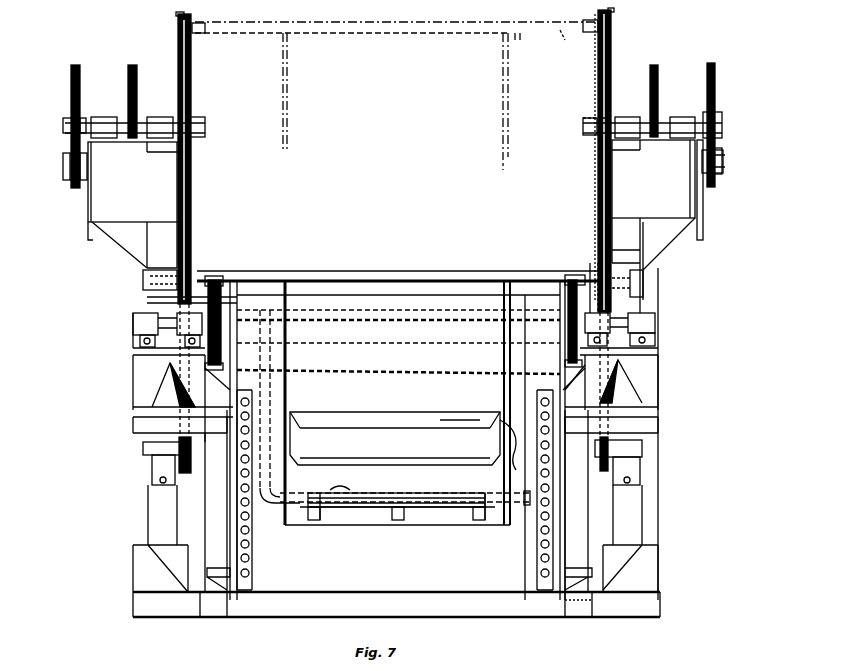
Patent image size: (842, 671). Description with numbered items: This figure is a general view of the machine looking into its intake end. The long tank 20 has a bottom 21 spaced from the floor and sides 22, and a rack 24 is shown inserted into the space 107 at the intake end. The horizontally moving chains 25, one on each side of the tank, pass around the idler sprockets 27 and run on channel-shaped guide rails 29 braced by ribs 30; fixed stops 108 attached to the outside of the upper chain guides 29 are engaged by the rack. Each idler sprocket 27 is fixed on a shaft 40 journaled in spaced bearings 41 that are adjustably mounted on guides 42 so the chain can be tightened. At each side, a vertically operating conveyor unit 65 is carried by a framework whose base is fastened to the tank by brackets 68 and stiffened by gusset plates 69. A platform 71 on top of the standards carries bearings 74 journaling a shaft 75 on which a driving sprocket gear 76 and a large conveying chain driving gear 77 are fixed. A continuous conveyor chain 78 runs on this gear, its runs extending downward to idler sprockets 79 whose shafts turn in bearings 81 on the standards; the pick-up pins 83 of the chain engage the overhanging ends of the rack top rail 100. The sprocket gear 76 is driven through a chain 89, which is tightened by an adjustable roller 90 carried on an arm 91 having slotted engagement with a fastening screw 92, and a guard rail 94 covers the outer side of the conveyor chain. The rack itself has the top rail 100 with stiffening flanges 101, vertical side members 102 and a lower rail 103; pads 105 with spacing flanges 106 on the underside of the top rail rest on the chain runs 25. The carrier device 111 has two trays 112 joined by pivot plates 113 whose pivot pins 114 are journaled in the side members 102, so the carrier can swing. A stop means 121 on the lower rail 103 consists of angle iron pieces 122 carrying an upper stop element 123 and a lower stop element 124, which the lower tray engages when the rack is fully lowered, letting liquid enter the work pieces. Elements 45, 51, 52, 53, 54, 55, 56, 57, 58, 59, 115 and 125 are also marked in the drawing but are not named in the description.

The tank 20 is at (306, 620).
The bottom 21 is at (460, 590).
The sides 22 is at (580, 460).
The racks 24 is at (516, 110).
The horizontally moving chains 25 is at (322, 294).
The idler sprockets 27 is at (580, 322).
The guide rails 29 is at (560, 340).
The ribs 30 is at (595, 378).
The shaft 40 is at (643, 320).
The bearings 41 is at (598, 320).
The guides 42 is at (652, 340).
The mounting plate 45 is at (635, 352).
The brace 51 is at (656, 372).
The base member 52 is at (660, 600).
The leg 53 is at (600, 510).
The foot plate 54 is at (578, 610).
The column 55 is at (630, 380).
The bearing block 56 is at (655, 345).
The cross plate 57 is at (640, 425).
The support beam 58 is at (585, 418).
The foot 59 is at (642, 566).
The vertically operating conveyor units 65 is at (594, 83).
The brackets 68 is at (628, 242).
The gusset plates 69 is at (633, 550).
The platform 71 is at (620, 117).
The bearings 74 is at (690, 117).
The shaft 75 is at (668, 117).
The driving sprocket gear 76 is at (646, 130).
The conveying chain driving gear 77 is at (596, 128).
The conveyor chain 78 is at (598, 184).
The idler sprockets 79 is at (600, 455).
The bearings 81 is at (628, 448).
The pick-up pins 83 is at (199, 33).
The chain 89 is at (656, 67).
The adjustable roller 90 is at (723, 160).
The arm 91 is at (721, 172).
The fastening screw 92 is at (704, 206).
The guard rail 94 is at (610, 56).
The top rail 100 is at (238, 32).
The stiffening flanges 101 is at (392, 34).
The side members 102 is at (516, 70).
The lower rail 103 is at (368, 517).
The pads 105 is at (585, 78).
The spacing flanges 106 is at (525, 36).
The space 107 is at (378, 350).
The fixed stops 108 is at (214, 276).
The carrier device 111 is at (384, 412).
The tray 112 is at (375, 424).
The pivot plates 113 is at (448, 420).
The pivot pins 114 is at (515, 420).
The hopper bottom 115 is at (500, 430).
The stop means 121 is at (488, 506).
The angle iron pieces 122 is at (395, 493).
The stop element 123 is at (388, 493).
The stop element 124 is at (455, 510).
The clamp 125 is at (402, 506).